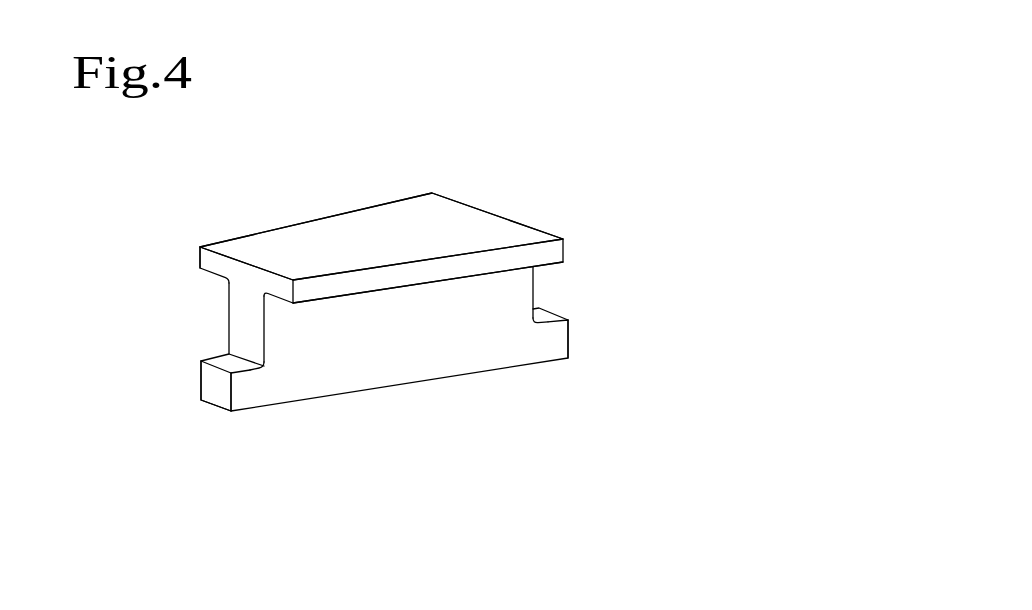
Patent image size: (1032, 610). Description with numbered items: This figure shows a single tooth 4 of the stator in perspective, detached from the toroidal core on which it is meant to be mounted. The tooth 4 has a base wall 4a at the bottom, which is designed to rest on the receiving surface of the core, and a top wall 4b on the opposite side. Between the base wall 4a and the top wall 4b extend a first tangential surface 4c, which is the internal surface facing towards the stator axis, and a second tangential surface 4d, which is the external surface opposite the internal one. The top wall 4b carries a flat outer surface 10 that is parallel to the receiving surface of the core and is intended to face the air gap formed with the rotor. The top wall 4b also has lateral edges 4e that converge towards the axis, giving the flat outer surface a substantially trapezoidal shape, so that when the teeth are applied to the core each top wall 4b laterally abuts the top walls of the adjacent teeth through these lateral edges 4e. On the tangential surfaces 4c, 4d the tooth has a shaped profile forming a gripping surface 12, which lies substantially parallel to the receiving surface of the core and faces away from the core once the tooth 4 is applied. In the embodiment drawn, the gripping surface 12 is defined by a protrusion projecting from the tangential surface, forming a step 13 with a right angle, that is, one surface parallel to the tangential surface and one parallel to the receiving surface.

The tooth 4 is at (503, 182).
The base wall 4a is at (338, 395).
The top wall 4b is at (310, 247).
The first tangential surface 4c is at (247, 319).
The second tangential surface 4d is at (537, 285).
The lateral edge 4e is at (198, 258).
The flat outer surface 10 is at (393, 228).
The gripping surface 12 is at (230, 363).
The step 13 is at (222, 388).